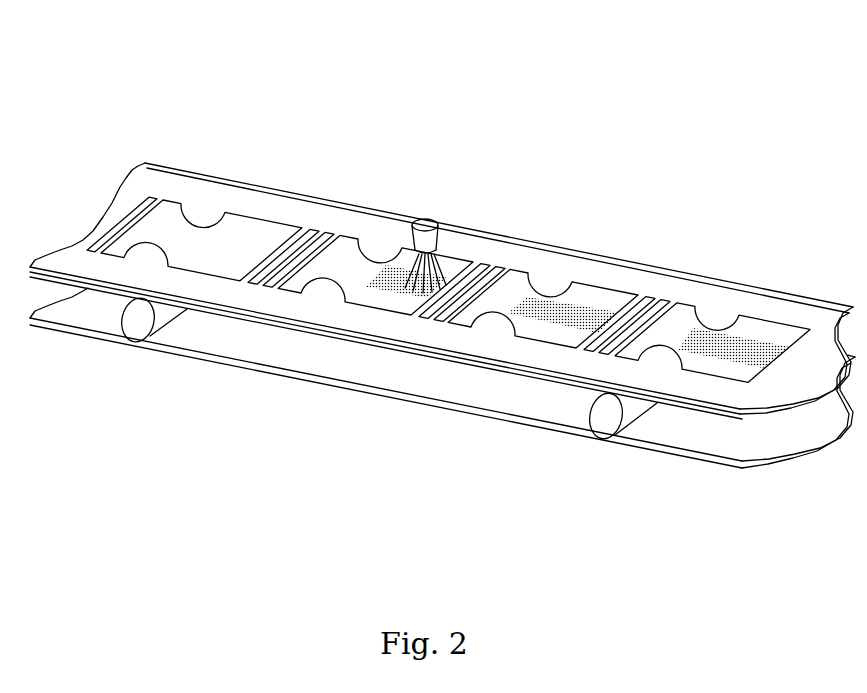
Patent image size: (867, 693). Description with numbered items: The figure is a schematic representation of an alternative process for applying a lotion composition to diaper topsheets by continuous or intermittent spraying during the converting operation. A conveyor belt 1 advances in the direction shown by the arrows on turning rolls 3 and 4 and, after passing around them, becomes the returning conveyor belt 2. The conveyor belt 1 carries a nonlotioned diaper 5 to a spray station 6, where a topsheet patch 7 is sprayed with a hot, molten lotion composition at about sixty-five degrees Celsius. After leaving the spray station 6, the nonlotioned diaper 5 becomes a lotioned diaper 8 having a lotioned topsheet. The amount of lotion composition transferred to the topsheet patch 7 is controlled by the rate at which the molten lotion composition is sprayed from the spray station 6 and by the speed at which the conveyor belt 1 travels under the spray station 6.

The conveyor belt 1 is at (172, 168).
The returning conveyor belt 2 is at (70, 313).
The turning roll 3 is at (143, 343).
The turning roll 4 is at (607, 433).
The nonlotioned diaper 5 is at (206, 243).
The spray station 6 is at (439, 214).
The topsheet patch 7 is at (552, 308).
The lotioned diaper 8 is at (698, 358).